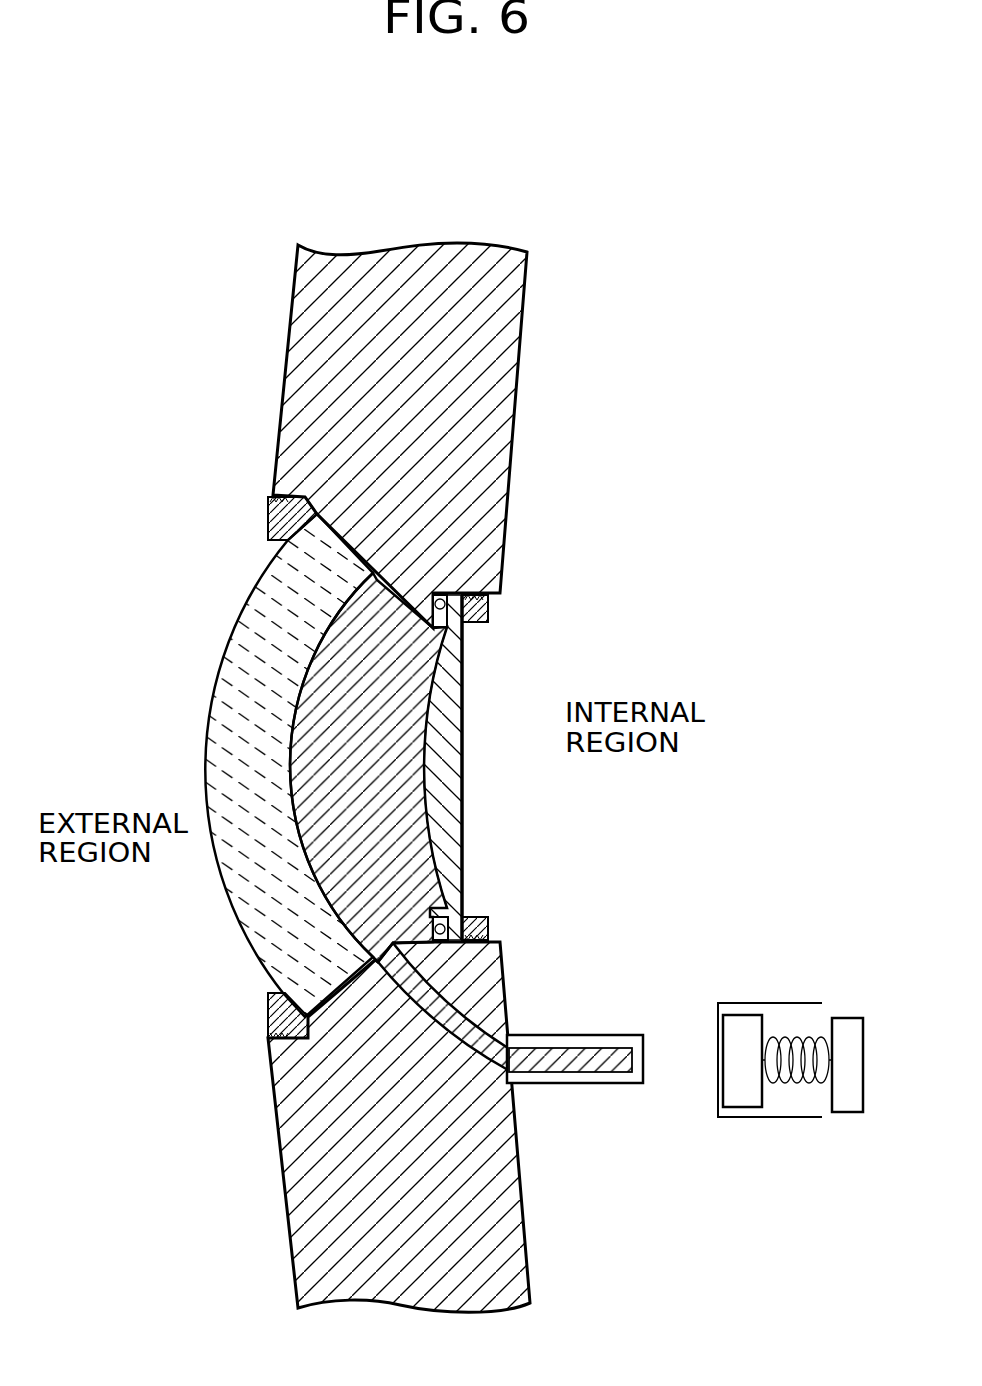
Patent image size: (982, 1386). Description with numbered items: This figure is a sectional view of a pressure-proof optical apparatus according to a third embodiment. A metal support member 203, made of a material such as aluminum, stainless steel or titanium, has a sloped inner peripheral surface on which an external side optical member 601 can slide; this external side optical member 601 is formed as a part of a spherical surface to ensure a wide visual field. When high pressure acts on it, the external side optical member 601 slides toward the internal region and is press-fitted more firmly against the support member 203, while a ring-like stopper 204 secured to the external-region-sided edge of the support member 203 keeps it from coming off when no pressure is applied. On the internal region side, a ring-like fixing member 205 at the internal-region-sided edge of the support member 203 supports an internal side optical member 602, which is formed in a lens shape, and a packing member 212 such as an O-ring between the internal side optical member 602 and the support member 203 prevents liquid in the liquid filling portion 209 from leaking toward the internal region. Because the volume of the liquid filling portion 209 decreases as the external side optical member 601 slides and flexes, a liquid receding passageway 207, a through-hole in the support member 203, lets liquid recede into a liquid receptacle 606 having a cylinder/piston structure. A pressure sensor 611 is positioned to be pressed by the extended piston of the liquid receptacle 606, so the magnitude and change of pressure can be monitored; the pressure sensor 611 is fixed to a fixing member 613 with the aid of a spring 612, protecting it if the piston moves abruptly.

The support member 203 is at (494, 423).
The ring-like stopper 204 is at (277, 520).
The ring-like fixing member 205 is at (490, 607).
The packing member 212 is at (450, 598).
The external side optical member 601 is at (252, 603).
The internal side optical member 602 is at (447, 677).
The liquid filling portion 209 is at (410, 813).
The liquid receding passageway 207 is at (477, 1005).
The liquid receptacle 606 is at (562, 1084).
The pressure sensor 611 is at (742, 1015).
The spring 612 is at (797, 1035).
The fixing member 613 is at (848, 1102).